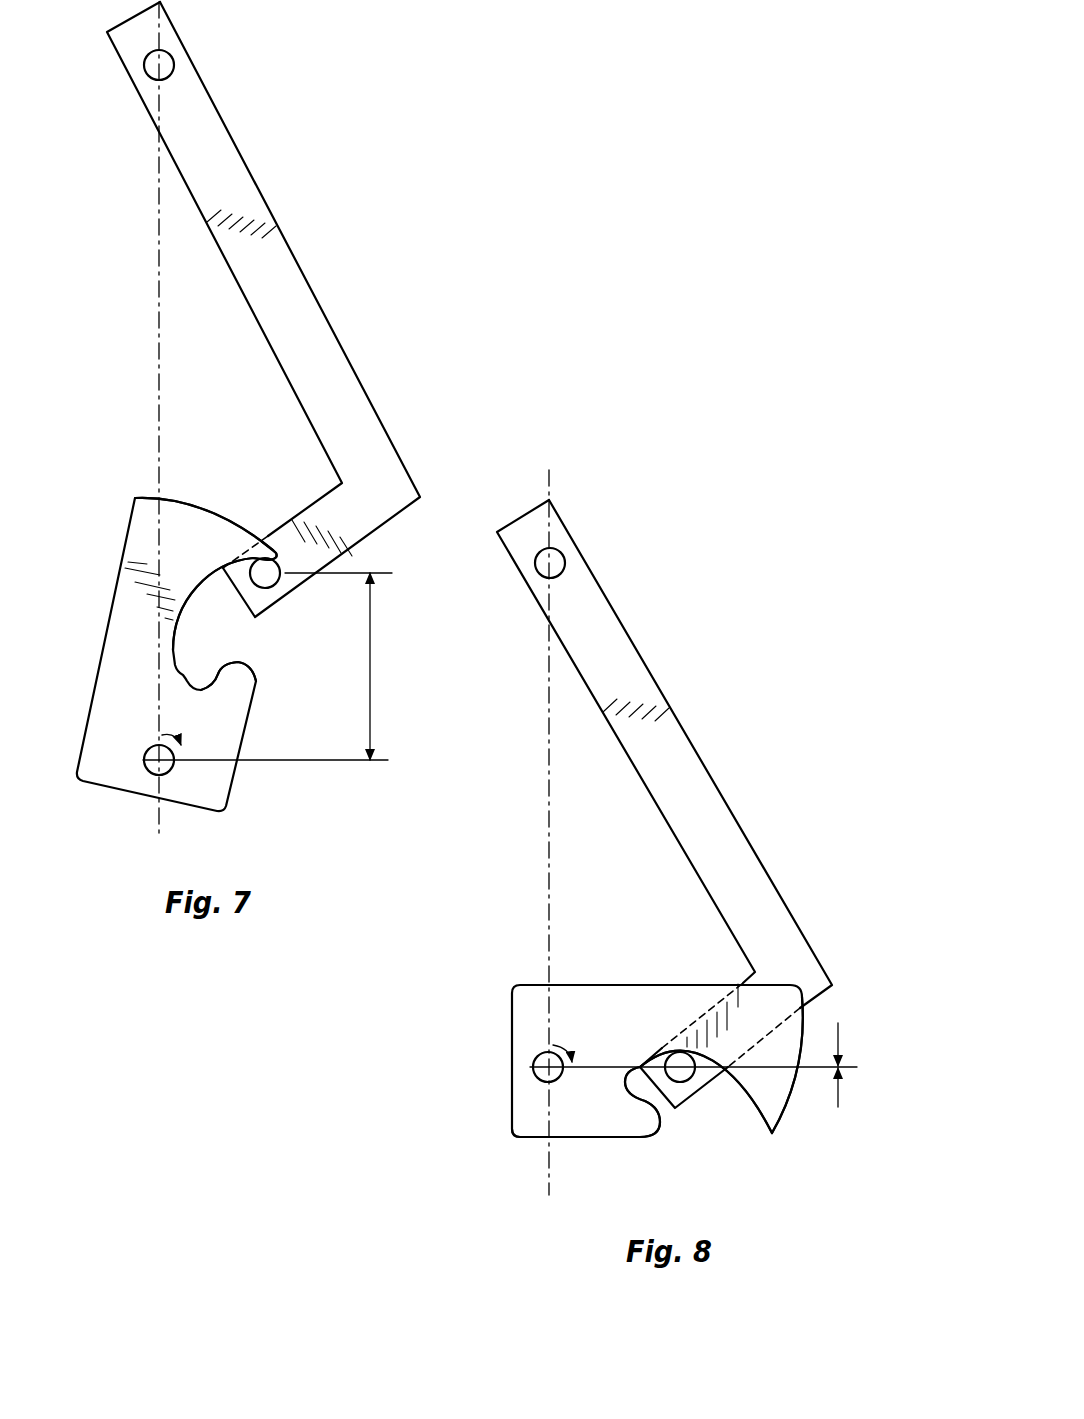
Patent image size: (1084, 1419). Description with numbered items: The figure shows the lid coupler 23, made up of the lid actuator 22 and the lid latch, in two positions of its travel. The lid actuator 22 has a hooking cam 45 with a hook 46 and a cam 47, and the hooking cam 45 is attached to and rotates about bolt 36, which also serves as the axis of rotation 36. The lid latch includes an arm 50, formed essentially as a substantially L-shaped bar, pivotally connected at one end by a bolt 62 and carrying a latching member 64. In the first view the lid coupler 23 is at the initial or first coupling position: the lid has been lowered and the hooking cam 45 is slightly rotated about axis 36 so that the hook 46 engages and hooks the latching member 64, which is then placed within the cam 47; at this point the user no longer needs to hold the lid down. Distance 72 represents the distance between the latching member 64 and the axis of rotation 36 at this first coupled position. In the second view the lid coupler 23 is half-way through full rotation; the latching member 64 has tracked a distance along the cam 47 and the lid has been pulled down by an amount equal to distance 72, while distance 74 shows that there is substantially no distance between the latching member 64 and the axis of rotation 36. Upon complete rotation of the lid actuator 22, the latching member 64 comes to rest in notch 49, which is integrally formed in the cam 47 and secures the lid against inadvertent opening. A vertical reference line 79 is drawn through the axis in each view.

In FIG. 7, the lid actuator 22 is at (168, 647).
In FIG. 8, the lid actuator 22 is at (587, 1089).
In FIG. 7, the lid coupler 23 is at (279, 322).
In FIG. 8, the lid coupler 23 is at (664, 804).
In FIG. 7, the bolt 36 is at (137, 767).
In FIG. 8, the bolt 36 is at (542, 1062).
In FIG. 7, the hooking cam 45 is at (135, 522).
In FIG. 8, the hooking cam 45 is at (627, 1127).
In FIG. 7, the hook 46 is at (267, 547).
In FIG. 8, the hook 46 is at (772, 1115).
In FIG. 7, the cam 47 is at (175, 660).
In FIG. 8, the cam 47 is at (708, 1062).
In FIG. 7, the notch 49 is at (203, 697).
In FIG. 8, the notch 49 is at (627, 1084).
In FIG. 7, the arm 50 is at (217, 145).
In FIG. 8, the arm 50 is at (683, 750).
In FIG. 7, the bolt 62 is at (163, 63).
In FIG. 8, the bolt 62 is at (555, 565).
In FIG. 7, the latching member 64 is at (265, 577).
In FIG. 8, the latching member 64 is at (678, 1068).
In FIG. 7, the distance 72 is at (267, 666).
In FIG. 8, the distance 74 is at (838, 1040).
In FIG. 7, the vertical axis 79 is at (158, 283).
In FIG. 8, the vertical axis 79 is at (547, 778).